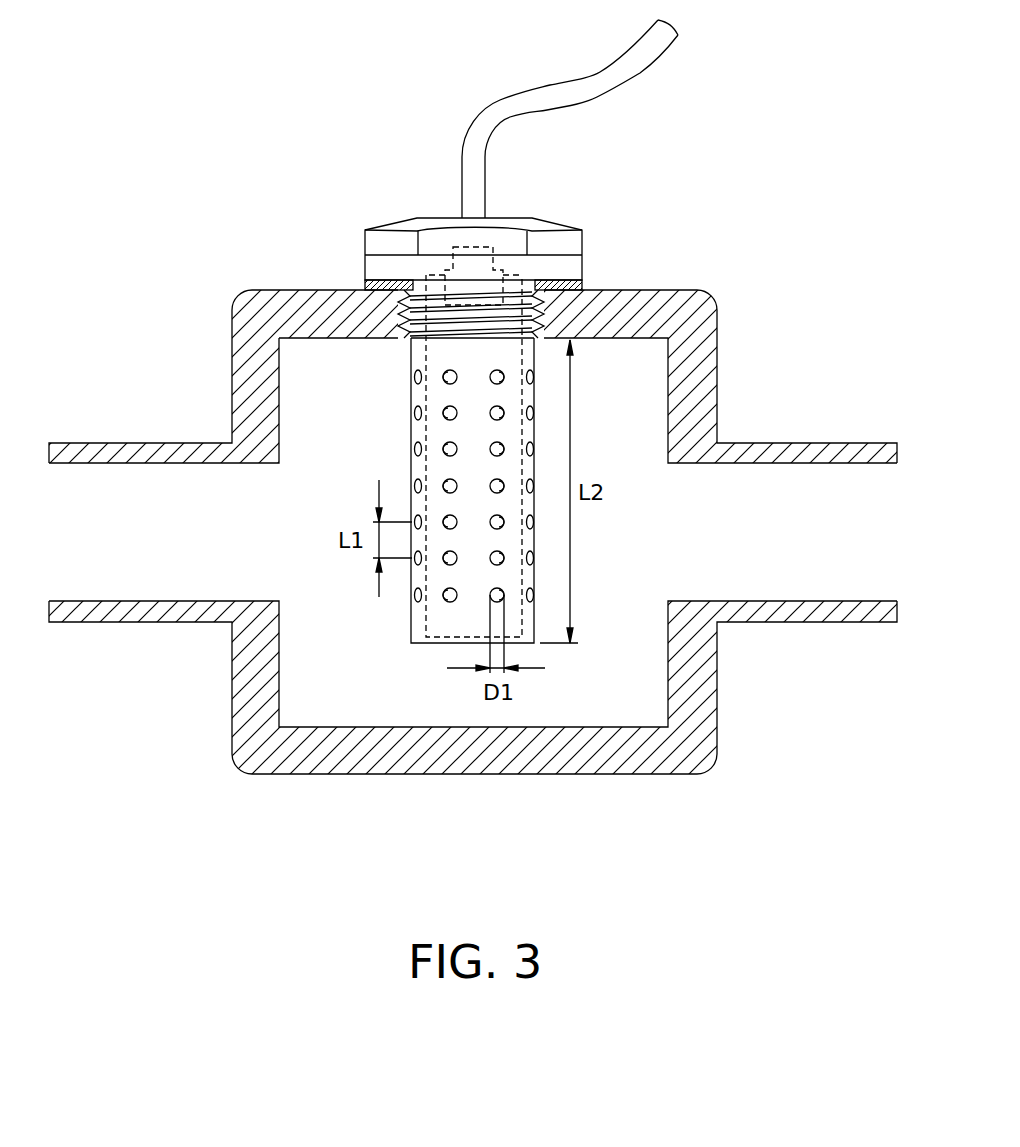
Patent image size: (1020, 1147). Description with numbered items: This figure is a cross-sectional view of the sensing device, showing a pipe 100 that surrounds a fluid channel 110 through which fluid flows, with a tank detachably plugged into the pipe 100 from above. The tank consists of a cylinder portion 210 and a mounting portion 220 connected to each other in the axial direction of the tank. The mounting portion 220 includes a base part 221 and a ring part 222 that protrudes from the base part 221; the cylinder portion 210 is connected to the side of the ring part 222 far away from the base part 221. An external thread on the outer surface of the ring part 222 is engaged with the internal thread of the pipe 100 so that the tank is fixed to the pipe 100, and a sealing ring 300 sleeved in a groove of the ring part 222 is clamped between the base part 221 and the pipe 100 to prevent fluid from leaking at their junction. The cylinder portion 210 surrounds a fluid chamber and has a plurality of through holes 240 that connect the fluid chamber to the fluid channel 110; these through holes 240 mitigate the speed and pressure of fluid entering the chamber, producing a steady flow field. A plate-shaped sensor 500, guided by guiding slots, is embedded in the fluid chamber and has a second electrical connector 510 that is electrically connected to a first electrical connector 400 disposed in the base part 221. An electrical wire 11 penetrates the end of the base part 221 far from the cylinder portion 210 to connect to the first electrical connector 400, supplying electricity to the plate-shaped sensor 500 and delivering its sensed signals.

The electrical wire 11 is at (552, 92).
The pipe 100 is at (702, 387).
The fluid channel 110 is at (615, 647).
The mounting portion 220 is at (418, 250).
The base part 221 is at (382, 240).
The ring part 222 is at (418, 315).
The sealing ring 300 is at (573, 285).
The first electrical connector 400 is at (455, 250).
The second electrical connector 510 is at (502, 282).
The cylinder portion 210 is at (411, 613).
The through holes 240 is at (450, 602).
The plate-shaped sensor 500 is at (423, 623).